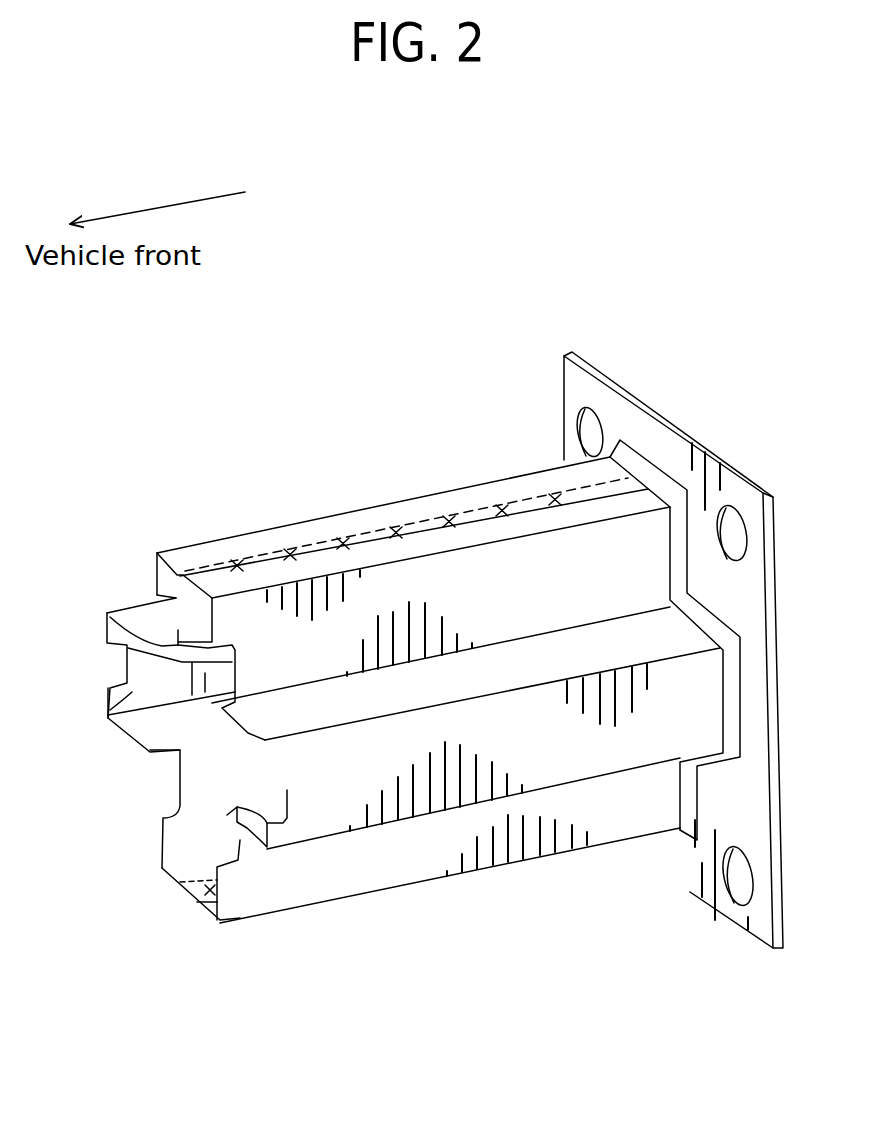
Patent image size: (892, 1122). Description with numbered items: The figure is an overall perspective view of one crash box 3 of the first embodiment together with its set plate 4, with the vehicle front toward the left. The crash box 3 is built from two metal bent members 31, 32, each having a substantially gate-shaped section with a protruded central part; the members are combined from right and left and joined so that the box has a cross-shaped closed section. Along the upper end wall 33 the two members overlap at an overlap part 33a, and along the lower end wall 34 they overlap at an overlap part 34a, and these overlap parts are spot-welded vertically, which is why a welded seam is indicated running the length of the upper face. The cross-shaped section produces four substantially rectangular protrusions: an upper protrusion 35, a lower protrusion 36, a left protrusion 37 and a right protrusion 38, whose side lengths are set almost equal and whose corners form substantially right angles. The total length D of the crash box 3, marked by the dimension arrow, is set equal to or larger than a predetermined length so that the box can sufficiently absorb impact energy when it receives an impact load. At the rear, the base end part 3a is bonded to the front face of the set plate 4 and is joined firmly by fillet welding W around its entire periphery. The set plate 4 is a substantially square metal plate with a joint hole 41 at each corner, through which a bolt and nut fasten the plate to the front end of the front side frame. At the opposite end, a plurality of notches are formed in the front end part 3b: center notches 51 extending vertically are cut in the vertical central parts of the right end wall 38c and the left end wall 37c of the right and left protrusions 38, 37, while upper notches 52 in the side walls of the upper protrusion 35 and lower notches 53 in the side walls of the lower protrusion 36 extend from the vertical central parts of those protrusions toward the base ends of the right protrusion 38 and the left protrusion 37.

The crash box 3 is at (434, 460).
The base end part 3a is at (660, 810).
The front end part 3b is at (230, 907).
The set plate 4 is at (670, 452).
The bent member 31 is at (132, 736).
The bent member 32 is at (231, 819).
The upper end wall 33 is at (310, 530).
The overlap part 33a is at (192, 545).
The lower end wall 34 is at (202, 907).
The overlap part 34a is at (177, 882).
The upper protrusion 35 is at (218, 626).
The lower protrusion 36 is at (162, 868).
The left protrusion 37 is at (345, 724).
The left end wall 37c is at (323, 808).
The right protrusion 38 is at (144, 598).
The right end wall 38c is at (108, 710).
The joint hole 41 is at (752, 580).
The center notch 51 is at (127, 668).
The upper notch 52 is at (133, 610).
The lower notch 53 is at (167, 790).
The total length D is at (602, 313).
The fillet welding W is at (733, 677).